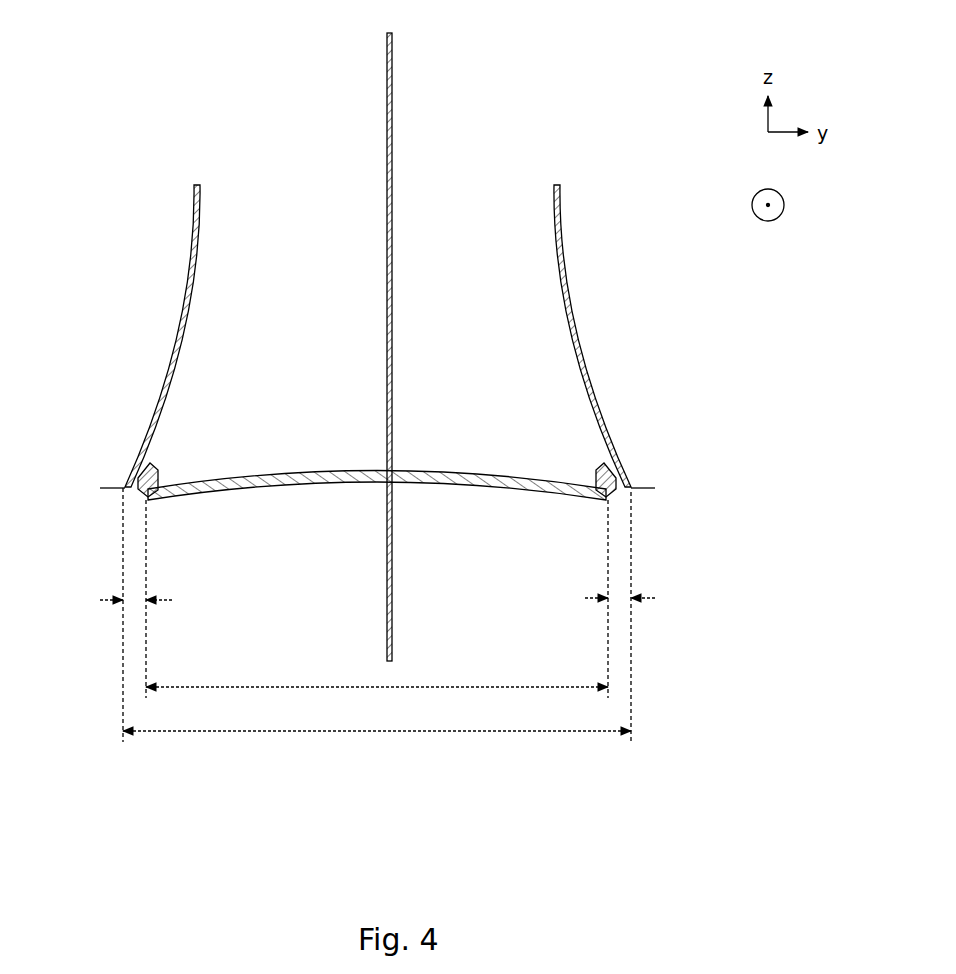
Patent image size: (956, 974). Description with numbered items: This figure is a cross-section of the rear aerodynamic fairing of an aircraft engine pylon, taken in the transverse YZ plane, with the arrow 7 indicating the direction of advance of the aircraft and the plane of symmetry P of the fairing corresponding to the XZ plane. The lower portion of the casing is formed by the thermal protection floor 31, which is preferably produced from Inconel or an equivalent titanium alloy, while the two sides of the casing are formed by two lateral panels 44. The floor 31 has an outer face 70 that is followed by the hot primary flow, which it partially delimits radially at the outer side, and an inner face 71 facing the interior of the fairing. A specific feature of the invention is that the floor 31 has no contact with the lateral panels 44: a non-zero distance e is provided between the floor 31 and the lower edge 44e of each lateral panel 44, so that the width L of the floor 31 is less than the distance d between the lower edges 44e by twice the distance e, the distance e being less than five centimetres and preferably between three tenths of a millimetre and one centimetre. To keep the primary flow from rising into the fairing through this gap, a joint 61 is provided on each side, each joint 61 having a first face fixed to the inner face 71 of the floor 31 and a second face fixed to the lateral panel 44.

The arrow 7 is at (781, 216).
The plane of symmetry P is at (392, 100).
The lateral panel 44 is at (172, 343).
The lower edge 44e is at (100, 488).
The thermal protection floor 31 is at (320, 490).
The outer face 70 is at (430, 482).
The inner face 71 is at (472, 473).
The joint 61 is at (170, 488).
The distance e is at (374, 586).
The width of the floor L is at (472, 688).
The distance between the lower edges d is at (583, 733).